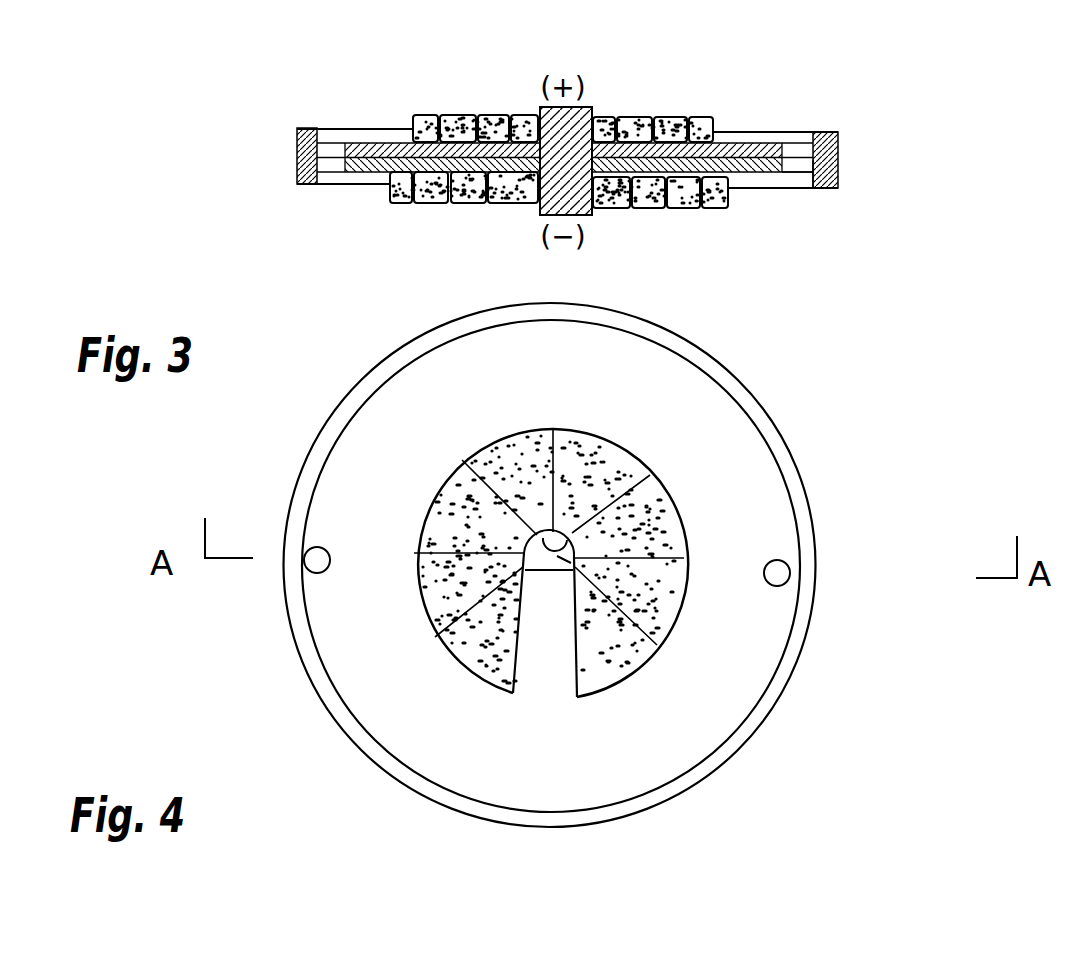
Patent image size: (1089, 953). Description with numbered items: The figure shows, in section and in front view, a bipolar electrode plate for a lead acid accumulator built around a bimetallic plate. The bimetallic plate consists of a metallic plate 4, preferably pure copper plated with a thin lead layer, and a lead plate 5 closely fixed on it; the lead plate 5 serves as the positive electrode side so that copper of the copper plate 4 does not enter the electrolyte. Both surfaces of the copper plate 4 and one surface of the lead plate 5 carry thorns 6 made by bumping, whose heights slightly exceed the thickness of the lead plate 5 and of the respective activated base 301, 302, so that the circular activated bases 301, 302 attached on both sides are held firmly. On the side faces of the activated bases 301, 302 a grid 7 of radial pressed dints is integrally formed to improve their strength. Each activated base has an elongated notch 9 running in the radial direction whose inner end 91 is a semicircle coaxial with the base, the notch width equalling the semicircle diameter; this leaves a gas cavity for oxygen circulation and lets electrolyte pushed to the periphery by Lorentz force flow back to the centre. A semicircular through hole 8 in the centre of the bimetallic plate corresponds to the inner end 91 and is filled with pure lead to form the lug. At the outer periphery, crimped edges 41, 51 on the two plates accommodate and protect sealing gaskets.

In FIG. 3, the metallic plate 4 is at (375, 168).
In FIG. 3, the lead plate 5 is at (380, 143).
In FIG. 3, the thorns 6 is at (713, 123).
In FIG. 4, the grid 7 is at (684, 552).
In FIG. 4, the semicircular through hole 8 is at (577, 562).
In FIG. 4, the elongated notch 9 is at (558, 675).
In FIG. 3, the crimped edge 41 is at (838, 180).
In FIG. 3, the crimped edge 51 is at (838, 142).
In FIG. 4, the inner end of the notch 91 is at (543, 540).
In FIG. 3, the activated base 301 is at (678, 115).
In FIG. 4, the activated base 301 is at (641, 669).
In FIG. 3, the activated base 302 is at (728, 203).